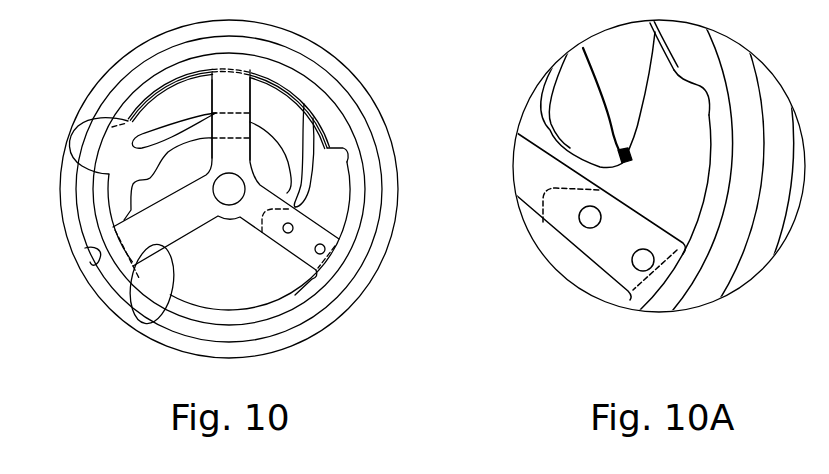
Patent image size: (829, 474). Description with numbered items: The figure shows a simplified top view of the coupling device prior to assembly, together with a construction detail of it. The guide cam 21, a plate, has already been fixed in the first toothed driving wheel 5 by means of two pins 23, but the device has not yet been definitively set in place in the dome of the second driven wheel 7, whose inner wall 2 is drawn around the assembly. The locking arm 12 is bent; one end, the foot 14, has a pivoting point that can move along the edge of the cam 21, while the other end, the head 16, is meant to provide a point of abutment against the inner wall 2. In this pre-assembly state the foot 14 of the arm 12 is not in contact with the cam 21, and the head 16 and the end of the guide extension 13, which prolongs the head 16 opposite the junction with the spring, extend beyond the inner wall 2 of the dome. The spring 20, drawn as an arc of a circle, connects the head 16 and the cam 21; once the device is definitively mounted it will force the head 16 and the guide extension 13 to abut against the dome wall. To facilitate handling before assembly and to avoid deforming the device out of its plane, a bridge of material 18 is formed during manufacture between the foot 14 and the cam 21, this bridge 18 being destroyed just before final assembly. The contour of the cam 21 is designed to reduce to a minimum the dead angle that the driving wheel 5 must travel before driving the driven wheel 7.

In FIG. 10, the inner wall 2 is at (85, 248).
In FIG. 10, the first toothed driving wheel 5 is at (302, 242).
In FIG. 10, the second driven wheel 7 is at (360, 284).
In FIG. 10, the locking arm 12 is at (266, 141).
In FIG. 10, the guide extension 13 is at (142, 305).
In FIG. 10, the foot 14 is at (316, 110).
In FIG. 10A, the foot 14 is at (574, 60).
In FIG. 10, the head 16 is at (90, 146).
In FIG. 10A, the bridge of material 18 is at (523, 136).
In FIG. 10, the spring 20 is at (172, 88).
In FIG. 10, the guide cam 21 is at (333, 190).
In FIG. 10A, the guide cam 21 is at (693, 117).
In FIG. 10, the pins 23 is at (294, 228).